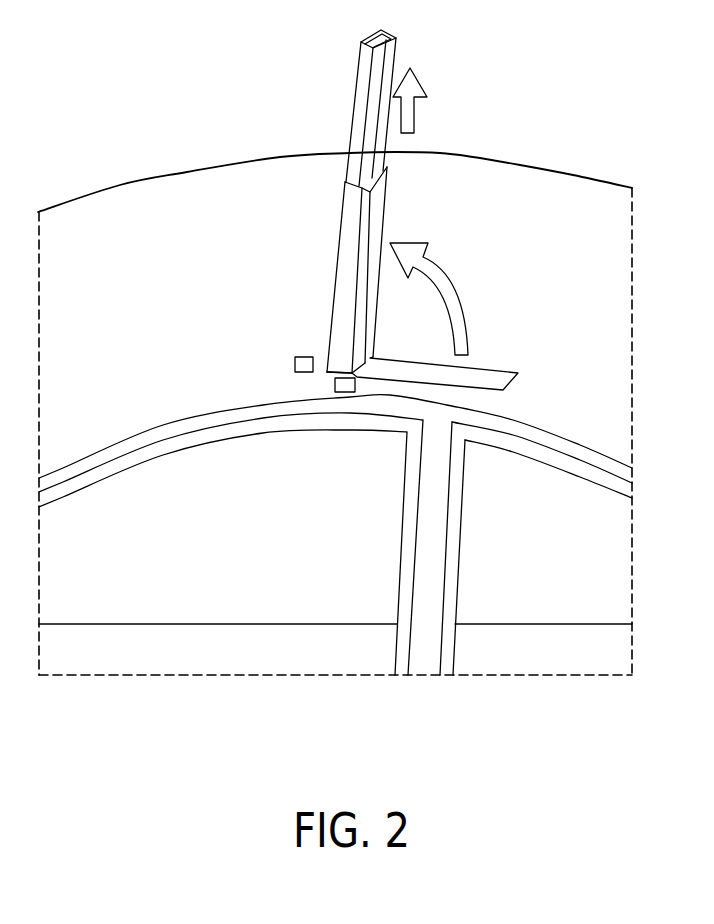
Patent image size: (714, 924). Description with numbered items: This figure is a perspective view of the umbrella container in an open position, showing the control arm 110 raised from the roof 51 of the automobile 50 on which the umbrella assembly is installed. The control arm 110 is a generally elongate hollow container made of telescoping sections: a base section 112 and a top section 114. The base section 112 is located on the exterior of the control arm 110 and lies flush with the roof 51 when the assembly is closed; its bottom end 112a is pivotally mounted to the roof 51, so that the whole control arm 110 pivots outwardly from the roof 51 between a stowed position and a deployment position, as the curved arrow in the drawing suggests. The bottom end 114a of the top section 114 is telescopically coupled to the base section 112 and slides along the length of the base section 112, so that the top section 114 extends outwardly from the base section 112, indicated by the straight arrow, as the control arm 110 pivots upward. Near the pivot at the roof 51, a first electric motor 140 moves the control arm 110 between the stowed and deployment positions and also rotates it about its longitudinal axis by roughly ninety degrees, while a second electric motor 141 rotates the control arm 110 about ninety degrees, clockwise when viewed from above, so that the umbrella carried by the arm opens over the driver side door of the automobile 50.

The automobile 50 is at (452, 105).
The roof 51 is at (553, 165).
The control arm 110 is at (358, 204).
The base section 112 is at (357, 223).
The bottom end of base section 112a is at (327, 367).
The top section 114 is at (377, 63).
The bottom end of top section 114a is at (352, 165).
The first electric motor 140 is at (345, 392).
The second electric motor 141 is at (295, 362).